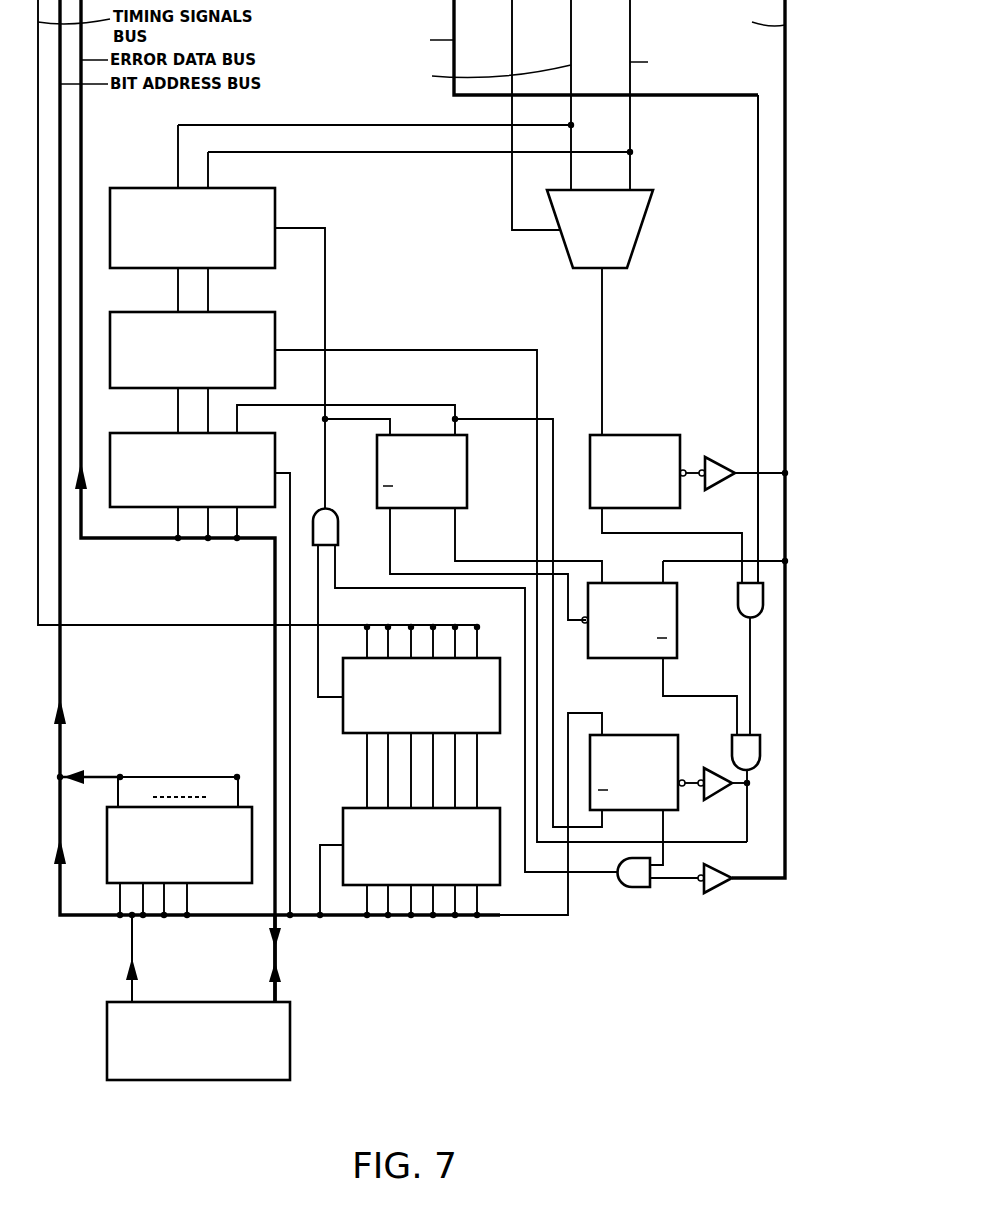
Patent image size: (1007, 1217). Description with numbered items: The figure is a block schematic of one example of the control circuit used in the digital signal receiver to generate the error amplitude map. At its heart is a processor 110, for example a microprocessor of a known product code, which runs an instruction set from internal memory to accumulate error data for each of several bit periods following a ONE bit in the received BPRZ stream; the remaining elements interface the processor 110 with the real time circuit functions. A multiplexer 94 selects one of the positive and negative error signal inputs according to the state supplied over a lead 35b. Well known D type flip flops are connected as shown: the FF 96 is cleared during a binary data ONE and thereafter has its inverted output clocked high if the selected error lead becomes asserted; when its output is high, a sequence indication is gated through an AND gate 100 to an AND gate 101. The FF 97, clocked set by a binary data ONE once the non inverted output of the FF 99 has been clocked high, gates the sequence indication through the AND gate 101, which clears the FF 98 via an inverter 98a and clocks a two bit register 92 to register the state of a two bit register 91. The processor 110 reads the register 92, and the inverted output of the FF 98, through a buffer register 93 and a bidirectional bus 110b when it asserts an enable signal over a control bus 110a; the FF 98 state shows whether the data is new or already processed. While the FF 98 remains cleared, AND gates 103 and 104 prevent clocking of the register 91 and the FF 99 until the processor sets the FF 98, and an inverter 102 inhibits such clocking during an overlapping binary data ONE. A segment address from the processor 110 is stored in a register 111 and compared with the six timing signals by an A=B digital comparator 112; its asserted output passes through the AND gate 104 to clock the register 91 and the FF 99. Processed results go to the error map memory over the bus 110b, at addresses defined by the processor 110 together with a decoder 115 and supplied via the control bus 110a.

The lead 35b is at (512, 15).
The two bit register 91 is at (275, 200).
The two bit register 92 is at (275, 324).
The buffer register 93 is at (275, 451).
The multiplexer 94 is at (638, 231).
The D type flip flop 96 is at (682, 446).
The D type flip flop 97 is at (631, 660).
The D type flip flop 98 is at (637, 735).
The inverter 98a is at (719, 798).
The D type flip flop 99 is at (467, 472).
The AND gate 100 is at (733, 607).
The AND gate 101 is at (731, 746).
The inverter 102 is at (715, 893).
The AND gate 103 is at (637, 888).
The AND gate 104 is at (339, 522).
The processor 110 is at (290, 1034).
The control bus 110a is at (131, 948).
The bidirectional bus 110b is at (278, 986).
The register 111 is at (493, 887).
The A=B digital comparator 112 is at (343, 723).
The decoder 115 is at (233, 883).